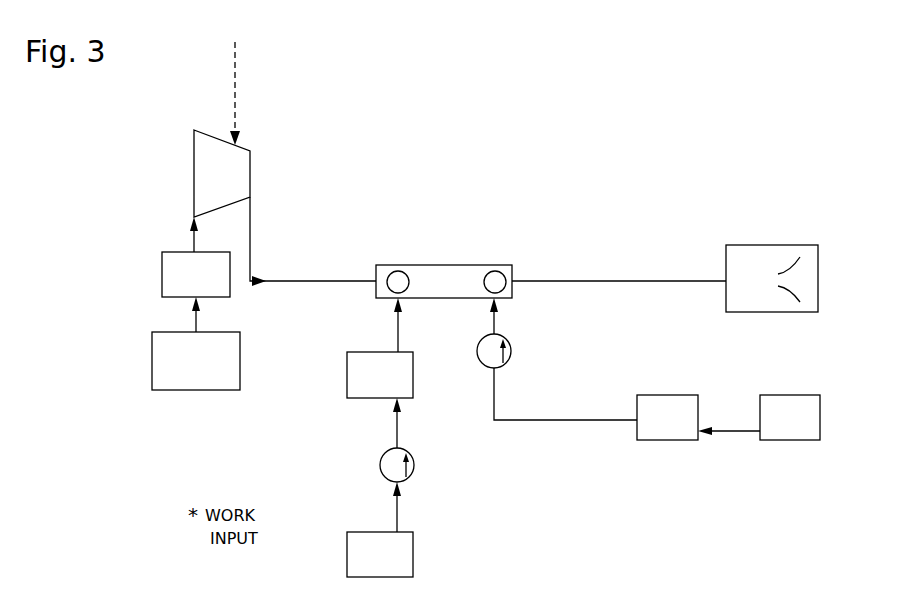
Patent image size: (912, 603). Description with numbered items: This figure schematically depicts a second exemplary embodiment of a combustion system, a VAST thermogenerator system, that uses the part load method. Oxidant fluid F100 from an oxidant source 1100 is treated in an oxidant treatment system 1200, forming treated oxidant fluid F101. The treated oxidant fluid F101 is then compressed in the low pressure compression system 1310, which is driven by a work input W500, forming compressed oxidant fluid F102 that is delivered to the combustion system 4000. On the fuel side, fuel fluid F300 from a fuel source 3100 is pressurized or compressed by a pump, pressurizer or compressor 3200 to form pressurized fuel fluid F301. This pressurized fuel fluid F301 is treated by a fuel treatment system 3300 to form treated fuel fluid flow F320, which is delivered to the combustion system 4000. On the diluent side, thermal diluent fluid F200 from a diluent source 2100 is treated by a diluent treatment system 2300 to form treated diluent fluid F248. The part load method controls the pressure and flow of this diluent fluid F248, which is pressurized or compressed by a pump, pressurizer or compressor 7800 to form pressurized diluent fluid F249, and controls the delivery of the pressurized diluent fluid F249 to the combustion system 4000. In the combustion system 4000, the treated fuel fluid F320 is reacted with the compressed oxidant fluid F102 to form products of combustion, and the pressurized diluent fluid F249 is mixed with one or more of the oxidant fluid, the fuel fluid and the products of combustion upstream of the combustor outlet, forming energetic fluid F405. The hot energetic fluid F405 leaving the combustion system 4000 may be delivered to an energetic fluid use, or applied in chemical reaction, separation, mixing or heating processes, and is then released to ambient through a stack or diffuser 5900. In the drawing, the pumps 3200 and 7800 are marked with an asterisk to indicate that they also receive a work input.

The work input W500 is at (232, 110).
The low pressure compression system 1310 is at (194, 165).
The treated oxidant fluid F101 is at (212, 243).
The compressed oxidant fluid F102 is at (251, 270).
The oxidant treatment system 1200 is at (224, 299).
The oxidant fluid F100 is at (191, 320).
The oxidant source 1100 is at (188, 391).
The combustion system 4000 is at (466, 262).
The energetic fluid F405 is at (640, 280).
The diffuser 5900 is at (760, 313).
The treated fuel fluid flow F320 is at (396, 346).
The fuel treatment system 3300 is at (347, 380).
The pressurized diluent fluid F249 is at (492, 331).
The diluent pump 7800 is at (511, 351).
The treated diluent fluid F248 is at (492, 377).
The diluent treatment system 2300 is at (642, 441).
The diluent source 2100 is at (765, 441).
The thermal diluent fluid F200 is at (745, 431).
The pressurized fuel fluid F301 is at (395, 424).
The fuel pump 3200 is at (381, 471).
The fuel fluid F300 is at (395, 510).
The fuel source 3100 is at (347, 558).